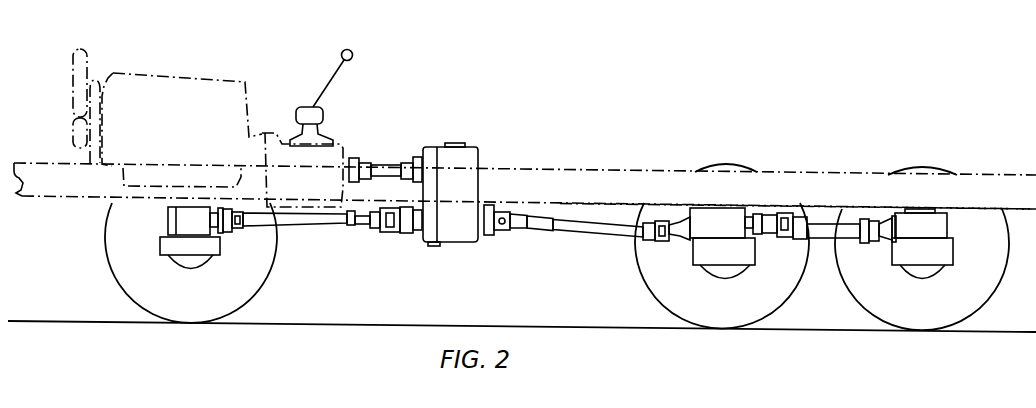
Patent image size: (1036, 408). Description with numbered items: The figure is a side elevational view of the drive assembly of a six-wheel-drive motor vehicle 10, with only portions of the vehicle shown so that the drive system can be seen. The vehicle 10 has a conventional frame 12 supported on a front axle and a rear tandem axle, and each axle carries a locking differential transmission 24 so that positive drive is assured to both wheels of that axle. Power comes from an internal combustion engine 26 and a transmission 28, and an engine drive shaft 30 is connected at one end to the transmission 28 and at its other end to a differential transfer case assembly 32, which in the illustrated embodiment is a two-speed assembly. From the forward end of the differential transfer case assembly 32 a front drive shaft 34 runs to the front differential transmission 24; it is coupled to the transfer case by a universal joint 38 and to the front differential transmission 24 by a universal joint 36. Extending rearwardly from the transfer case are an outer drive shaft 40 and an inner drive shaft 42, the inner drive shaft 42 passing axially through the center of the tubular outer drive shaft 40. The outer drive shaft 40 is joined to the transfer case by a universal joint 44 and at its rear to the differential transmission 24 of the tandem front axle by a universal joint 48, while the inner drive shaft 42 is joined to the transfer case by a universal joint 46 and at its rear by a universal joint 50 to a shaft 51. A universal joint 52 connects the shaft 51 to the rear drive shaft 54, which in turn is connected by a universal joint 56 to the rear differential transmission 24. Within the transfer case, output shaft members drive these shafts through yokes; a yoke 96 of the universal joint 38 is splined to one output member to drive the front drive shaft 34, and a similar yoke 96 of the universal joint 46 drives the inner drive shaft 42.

The vehicle 10 is at (415, 102).
The frame 12 is at (548, 171).
The differential transmission 24 is at (201, 263).
The internal combustion engine 26 is at (213, 78).
The transmission 28 is at (337, 145).
The engine drive shaft 30 is at (387, 162).
The differential transfer case assembly 32 is at (471, 149).
The front drive shaft 34 is at (300, 234).
The universal joint 36 is at (233, 232).
The universal joint 38 is at (392, 240).
The outer drive shaft 40 is at (587, 205).
The inner drive shaft 42 is at (589, 234).
The universal joint 44 is at (503, 201).
The universal joint 46 is at (503, 232).
The universal joint 48 is at (676, 208).
The universal joint 50 is at (668, 241).
The shaft 51 is at (772, 217).
The universal joint 52 is at (788, 217).
The rear drive shaft 54 is at (833, 222).
The universal joint 56 is at (873, 222).
The yoke 96 is at (410, 240).